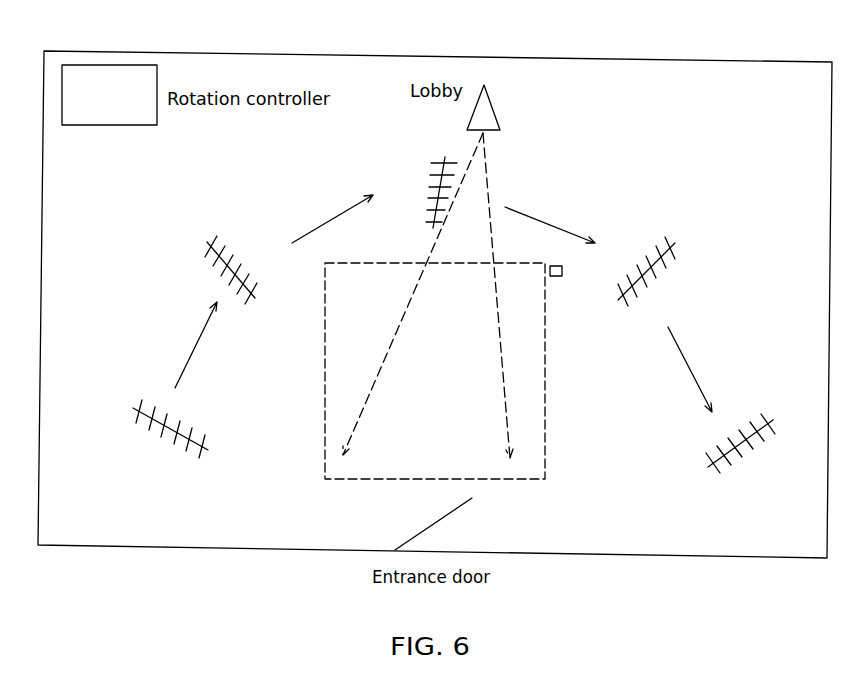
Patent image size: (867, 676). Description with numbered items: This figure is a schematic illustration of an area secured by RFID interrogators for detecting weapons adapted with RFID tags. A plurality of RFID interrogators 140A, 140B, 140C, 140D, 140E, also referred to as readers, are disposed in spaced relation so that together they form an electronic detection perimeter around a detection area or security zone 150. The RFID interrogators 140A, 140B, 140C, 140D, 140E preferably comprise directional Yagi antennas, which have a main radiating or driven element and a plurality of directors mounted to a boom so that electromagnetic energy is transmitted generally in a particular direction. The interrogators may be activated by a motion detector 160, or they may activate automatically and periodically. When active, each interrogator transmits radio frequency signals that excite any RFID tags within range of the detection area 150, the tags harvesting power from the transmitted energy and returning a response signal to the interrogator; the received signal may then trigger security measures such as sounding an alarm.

The RFID interrogator 140A is at (134, 409).
The RFID interrogator 140B is at (207, 242).
The RFID interrogator 140C is at (440, 157).
The RFID interrogator 140D is at (675, 243).
The RFID interrogator 140E is at (773, 420).
The detection area/security zone 150 is at (470, 358).
The motion detector 160 is at (488, 97).